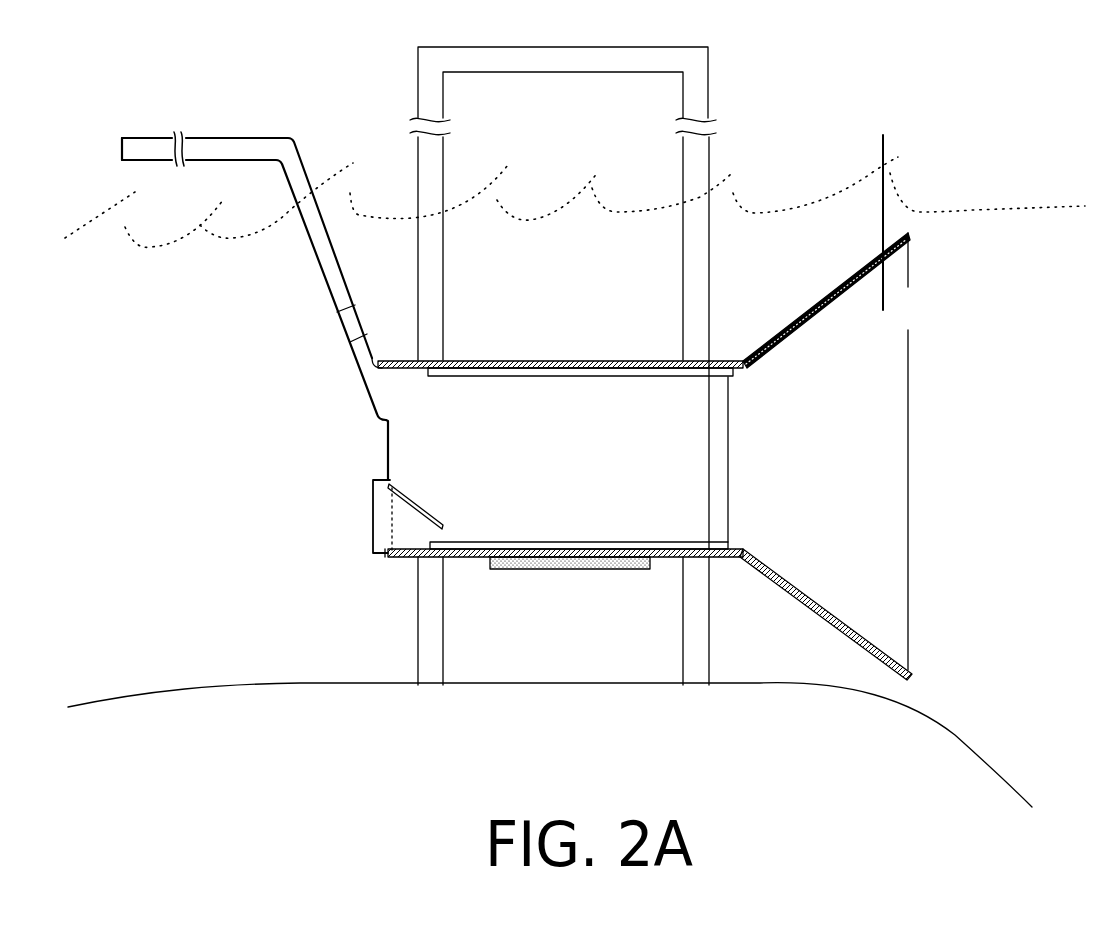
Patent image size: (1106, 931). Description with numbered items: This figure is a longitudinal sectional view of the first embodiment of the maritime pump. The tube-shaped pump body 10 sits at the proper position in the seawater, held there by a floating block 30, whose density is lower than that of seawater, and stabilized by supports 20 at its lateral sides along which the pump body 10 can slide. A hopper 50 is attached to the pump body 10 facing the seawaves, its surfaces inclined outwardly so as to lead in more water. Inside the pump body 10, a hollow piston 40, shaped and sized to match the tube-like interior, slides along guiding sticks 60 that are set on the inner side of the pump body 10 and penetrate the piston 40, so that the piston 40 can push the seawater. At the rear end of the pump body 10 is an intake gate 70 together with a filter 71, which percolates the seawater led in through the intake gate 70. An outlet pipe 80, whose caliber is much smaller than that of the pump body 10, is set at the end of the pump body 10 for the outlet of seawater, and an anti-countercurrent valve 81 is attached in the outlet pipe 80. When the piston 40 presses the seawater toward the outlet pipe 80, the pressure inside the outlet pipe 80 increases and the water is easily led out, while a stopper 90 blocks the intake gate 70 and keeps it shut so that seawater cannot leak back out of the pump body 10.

The pump body 10 is at (640, 358).
The supports 20 is at (637, 63).
The floating block 30 is at (522, 563).
The piston 40 is at (718, 477).
The hopper 50 is at (886, 207).
The guiding sticks 60 is at (615, 563).
The intake gate 70 is at (372, 520).
The filter 71 is at (410, 507).
The outlet pipe 80 is at (297, 182).
The anti-countercurrent valve 81 is at (350, 327).
The stopper 90 is at (385, 553).